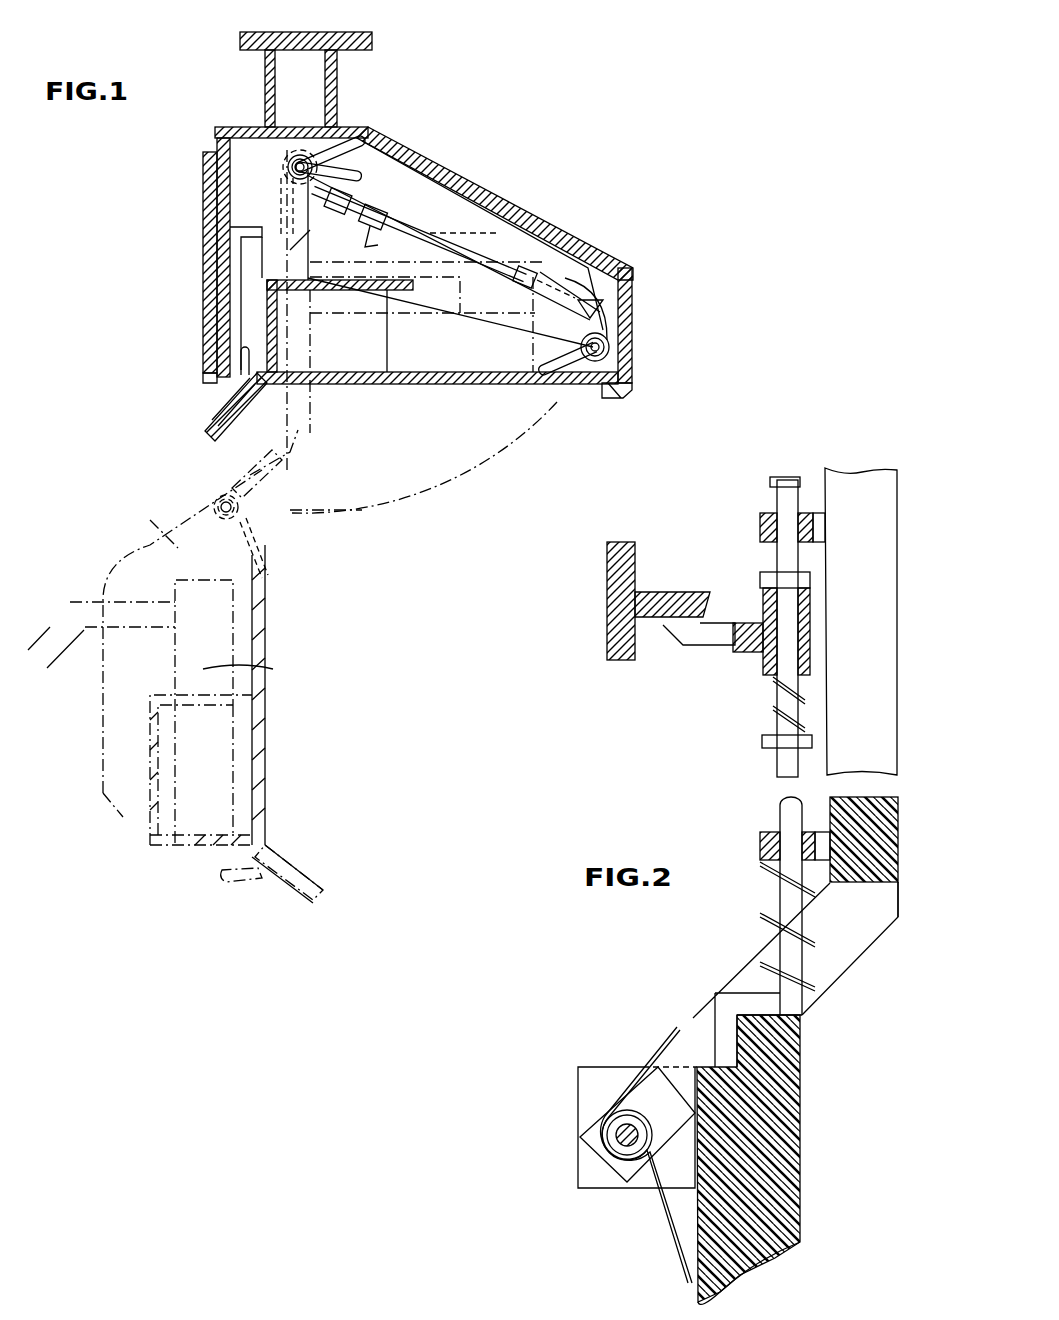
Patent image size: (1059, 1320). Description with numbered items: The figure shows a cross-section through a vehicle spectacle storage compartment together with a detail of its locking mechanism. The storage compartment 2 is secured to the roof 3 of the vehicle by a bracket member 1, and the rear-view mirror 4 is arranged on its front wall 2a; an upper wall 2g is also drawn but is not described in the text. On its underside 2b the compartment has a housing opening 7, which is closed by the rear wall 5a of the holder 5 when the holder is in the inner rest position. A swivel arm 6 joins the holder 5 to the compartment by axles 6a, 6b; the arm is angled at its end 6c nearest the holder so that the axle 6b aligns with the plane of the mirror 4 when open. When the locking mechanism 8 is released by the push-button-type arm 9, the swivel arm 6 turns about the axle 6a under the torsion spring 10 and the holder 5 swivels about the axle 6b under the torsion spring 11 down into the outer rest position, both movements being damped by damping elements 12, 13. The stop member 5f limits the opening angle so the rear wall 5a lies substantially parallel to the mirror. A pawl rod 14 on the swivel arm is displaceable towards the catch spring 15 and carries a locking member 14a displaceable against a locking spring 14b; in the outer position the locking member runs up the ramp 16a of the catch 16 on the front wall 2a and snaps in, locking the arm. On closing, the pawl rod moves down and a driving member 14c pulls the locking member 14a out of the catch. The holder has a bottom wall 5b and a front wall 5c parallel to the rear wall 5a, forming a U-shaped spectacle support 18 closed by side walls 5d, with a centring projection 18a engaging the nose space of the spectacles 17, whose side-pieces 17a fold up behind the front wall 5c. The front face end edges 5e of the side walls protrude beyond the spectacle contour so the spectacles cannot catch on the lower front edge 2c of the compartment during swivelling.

In FIG. 1, the bracket member 1 is at (338, 88).
In FIG. 1, the storage compartment 2 is at (452, 170).
In FIG. 1, the front wall 2a is at (226, 310).
In FIG. 2, the front wall 2a is at (612, 612).
In FIG. 1, the underside 2b is at (225, 392).
In FIG. 1, the lower front edge 2c is at (222, 388).
In FIG. 1, the housing top wall 2g is at (257, 127).
In FIG. 1, the roof 3 is at (243, 34).
In FIG. 1, the rear-view mirror 4 is at (203, 283).
In FIG. 1, the holder 5 is at (152, 847).
In FIG. 1, the rear wall 5a is at (433, 385).
In FIG. 2, the rear wall 5a is at (800, 1187).
In FIG. 1, the bottom wall 5b is at (352, 292).
In FIG. 1, the front wall 5c is at (402, 292).
In FIG. 1, the side walls 5d is at (163, 534).
In FIG. 1, the front face end edges 5e is at (572, 268).
In FIG. 1, the stop member 5f is at (298, 512).
In FIG. 2, the stop member 5f is at (790, 1069).
In FIG. 1, the swivel arm 6 is at (447, 208).
In FIG. 2, the swivel arm 6 is at (873, 715).
In FIG. 1, the axle 6a is at (297, 173).
In FIG. 1, the axle 6b is at (222, 519).
In FIG. 2, the axle 6b is at (613, 1160).
In FIG. 1, the end 6c is at (240, 463).
In FIG. 2, the end 6c is at (743, 977).
In FIG. 1, the housing opening 7 is at (445, 369).
In FIG. 1, the locking mechanism 8 is at (237, 887).
In FIG. 1, the push-button-type arm 9 is at (212, 433).
In FIG. 1, the torsion spring 10 is at (373, 147).
In FIG. 1, the torsion spring 11 is at (242, 548).
In FIG. 2, the torsion spring 11 is at (673, 1232).
In FIG. 1, the damping element 12 is at (290, 168).
In FIG. 1, the damping element 13 is at (214, 500).
In FIG. 1, the pawl rod 14 is at (474, 250).
In FIG. 2, the pawl rod 14 is at (780, 808).
In FIG. 1, the locking member 14a is at (365, 241).
In FIG. 2, the locking member 14a is at (748, 622).
In FIG. 2, the locking spring 14b is at (775, 715).
In FIG. 2, the driving member 14c is at (810, 580).
In FIG. 1, the catch spring 15 is at (625, 290).
In FIG. 2, the catch spring 15 is at (803, 933).
In FIG. 1, the catch 16 is at (268, 252).
In FIG. 2, the catch 16 is at (665, 592).
In FIG. 2, the ramp 16a is at (702, 645).
In FIG. 1, the spectacles 17 is at (400, 380).
In FIG. 1, the side-pieces 17a is at (520, 382).
In FIG. 1, the spectacle support 18 is at (353, 375).
In FIG. 1, the centring projection 18a is at (213, 707).